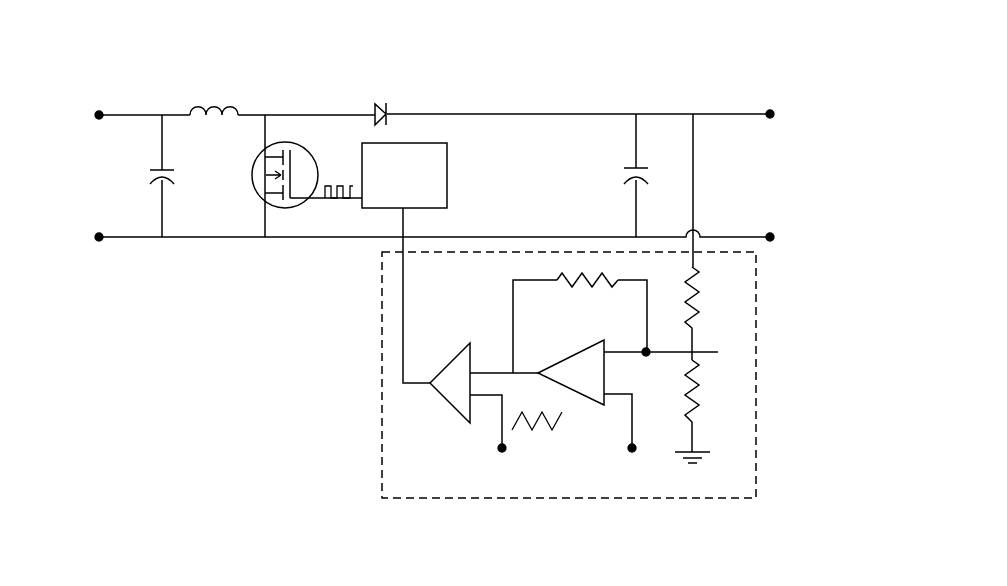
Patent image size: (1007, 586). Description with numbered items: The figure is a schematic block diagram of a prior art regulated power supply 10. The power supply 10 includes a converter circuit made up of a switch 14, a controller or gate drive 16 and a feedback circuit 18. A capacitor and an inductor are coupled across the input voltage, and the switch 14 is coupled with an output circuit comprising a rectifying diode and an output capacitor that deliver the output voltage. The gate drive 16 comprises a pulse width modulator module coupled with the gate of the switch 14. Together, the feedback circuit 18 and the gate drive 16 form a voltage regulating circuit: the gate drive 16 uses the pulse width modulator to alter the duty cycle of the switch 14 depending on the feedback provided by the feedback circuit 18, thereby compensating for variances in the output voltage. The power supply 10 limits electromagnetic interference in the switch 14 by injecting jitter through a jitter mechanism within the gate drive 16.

The regulated power supply 10 is at (138, 51).
The switch 14 is at (258, 192).
The gate drive 16 is at (416, 142).
The feedback circuit 18 is at (756, 385).